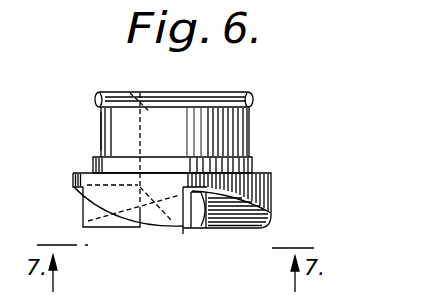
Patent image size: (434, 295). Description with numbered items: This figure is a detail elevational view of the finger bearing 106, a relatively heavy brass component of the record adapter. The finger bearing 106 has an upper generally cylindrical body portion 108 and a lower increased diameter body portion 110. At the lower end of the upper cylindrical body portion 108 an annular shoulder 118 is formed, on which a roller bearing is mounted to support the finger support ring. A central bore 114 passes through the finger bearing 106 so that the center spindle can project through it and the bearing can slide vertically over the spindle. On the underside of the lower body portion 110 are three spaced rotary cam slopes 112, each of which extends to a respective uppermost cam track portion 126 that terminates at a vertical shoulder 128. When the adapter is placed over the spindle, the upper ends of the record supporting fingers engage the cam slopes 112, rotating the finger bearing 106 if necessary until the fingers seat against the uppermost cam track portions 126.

The finger bearing 106 is at (258, 127).
The upper generally cylindrical body portion 108 is at (98, 118).
The lower increased diameter body portion 110 is at (75, 177).
The rotary cam slopes 112 is at (153, 229).
The central bore 114 is at (142, 122).
The annular shoulder 118 is at (258, 173).
The uppermost cam track portion 126 is at (195, 231).
The vertical shoulder 128 is at (183, 234).